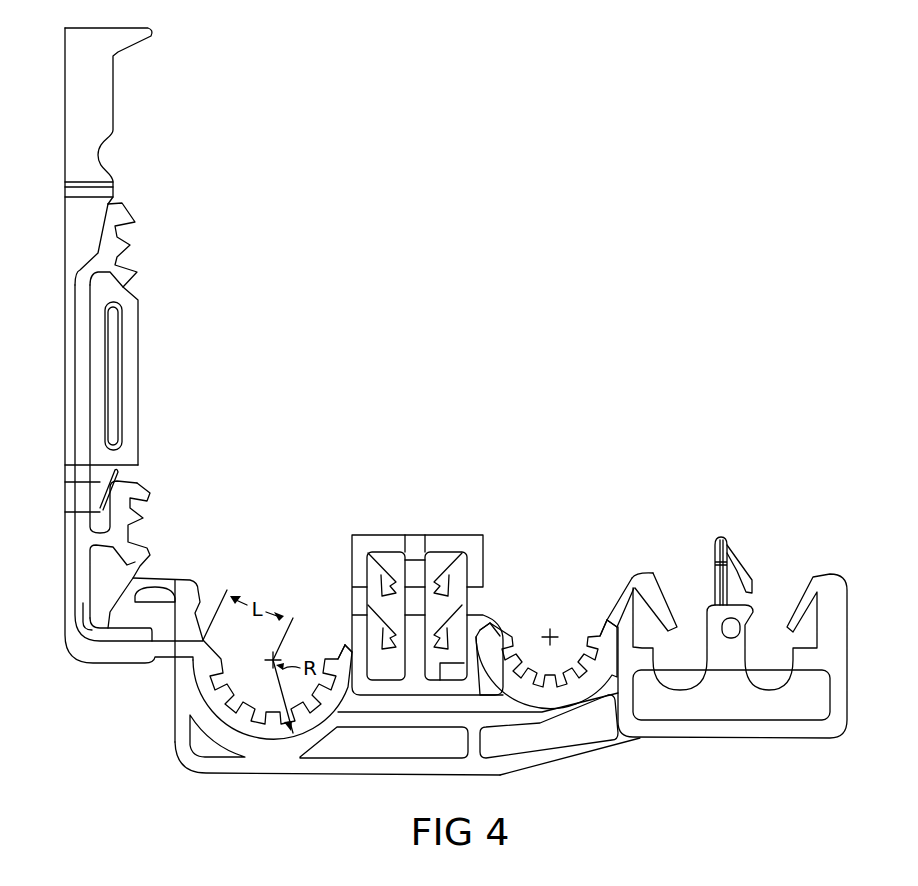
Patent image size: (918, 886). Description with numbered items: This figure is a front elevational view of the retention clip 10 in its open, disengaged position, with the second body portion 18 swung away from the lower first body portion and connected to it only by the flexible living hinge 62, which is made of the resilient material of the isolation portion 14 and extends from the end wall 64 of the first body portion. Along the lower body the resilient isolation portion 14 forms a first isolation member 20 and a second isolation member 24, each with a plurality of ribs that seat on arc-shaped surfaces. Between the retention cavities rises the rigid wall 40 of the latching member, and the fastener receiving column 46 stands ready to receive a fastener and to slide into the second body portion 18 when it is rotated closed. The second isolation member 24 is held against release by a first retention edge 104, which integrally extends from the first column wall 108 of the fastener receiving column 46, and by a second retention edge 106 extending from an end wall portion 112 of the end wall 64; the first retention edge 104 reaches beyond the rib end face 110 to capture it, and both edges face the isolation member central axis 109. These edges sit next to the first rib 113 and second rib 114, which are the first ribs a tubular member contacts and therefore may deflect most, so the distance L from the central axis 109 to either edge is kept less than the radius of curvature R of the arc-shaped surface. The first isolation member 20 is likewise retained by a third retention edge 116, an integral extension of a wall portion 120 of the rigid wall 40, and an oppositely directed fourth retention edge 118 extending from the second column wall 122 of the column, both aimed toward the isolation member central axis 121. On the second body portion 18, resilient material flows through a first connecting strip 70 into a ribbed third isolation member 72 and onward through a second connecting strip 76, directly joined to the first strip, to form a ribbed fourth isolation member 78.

The retention clip 10 is at (530, 340).
The isolation portion 14 is at (413, 702).
The second body portion 18 is at (82, 207).
The first isolation member 20 is at (552, 698).
The second isolation member 24 is at (262, 733).
The rigid wall 40 is at (630, 612).
The fastener receiving column 46 is at (367, 542).
The living hinge 62 is at (165, 652).
The end wall 64 is at (183, 713).
The first connecting strip 70 is at (83, 603).
The third isolation member 72 is at (118, 510).
The second connecting strip 76 is at (83, 375).
The fourth isolation member 78 is at (108, 235).
The first retention edge 104 is at (340, 634).
The second retention edge 106 is at (218, 634).
The first column wall 108 is at (344, 640).
The isolation member central axis 109 is at (203, 737).
The rib end face 110 is at (358, 636).
The end wall portion 112 is at (193, 622).
The first rib 113 is at (330, 665).
The second rib 114 is at (203, 685).
The third retention edge 116 is at (606, 615).
The fourth retention edge 118 is at (498, 618).
The wall portion 120 is at (637, 577).
The isolation member central axis 121 is at (549, 630).
The second column wall 122 is at (492, 618).